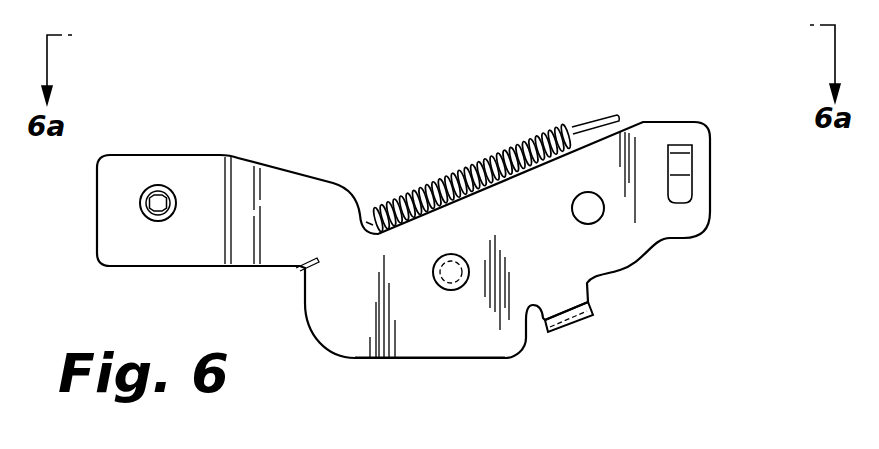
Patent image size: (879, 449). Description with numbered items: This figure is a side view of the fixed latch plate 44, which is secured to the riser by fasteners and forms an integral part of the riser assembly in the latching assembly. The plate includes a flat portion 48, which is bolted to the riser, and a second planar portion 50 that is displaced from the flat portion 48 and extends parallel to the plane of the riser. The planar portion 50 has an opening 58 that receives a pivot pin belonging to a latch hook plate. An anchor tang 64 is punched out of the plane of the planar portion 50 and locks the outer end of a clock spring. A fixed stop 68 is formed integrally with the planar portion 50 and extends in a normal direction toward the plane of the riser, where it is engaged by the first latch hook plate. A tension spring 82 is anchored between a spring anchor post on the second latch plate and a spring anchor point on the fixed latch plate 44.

The fixed latch plate 44 is at (583, 170).
The flat portion 48 is at (185, 175).
The planar portion 50 is at (453, 332).
The opening 58 is at (593, 197).
The anchor tang 64 is at (683, 163).
The fixed stop 68 is at (573, 328).
The tension spring 82 is at (512, 150).